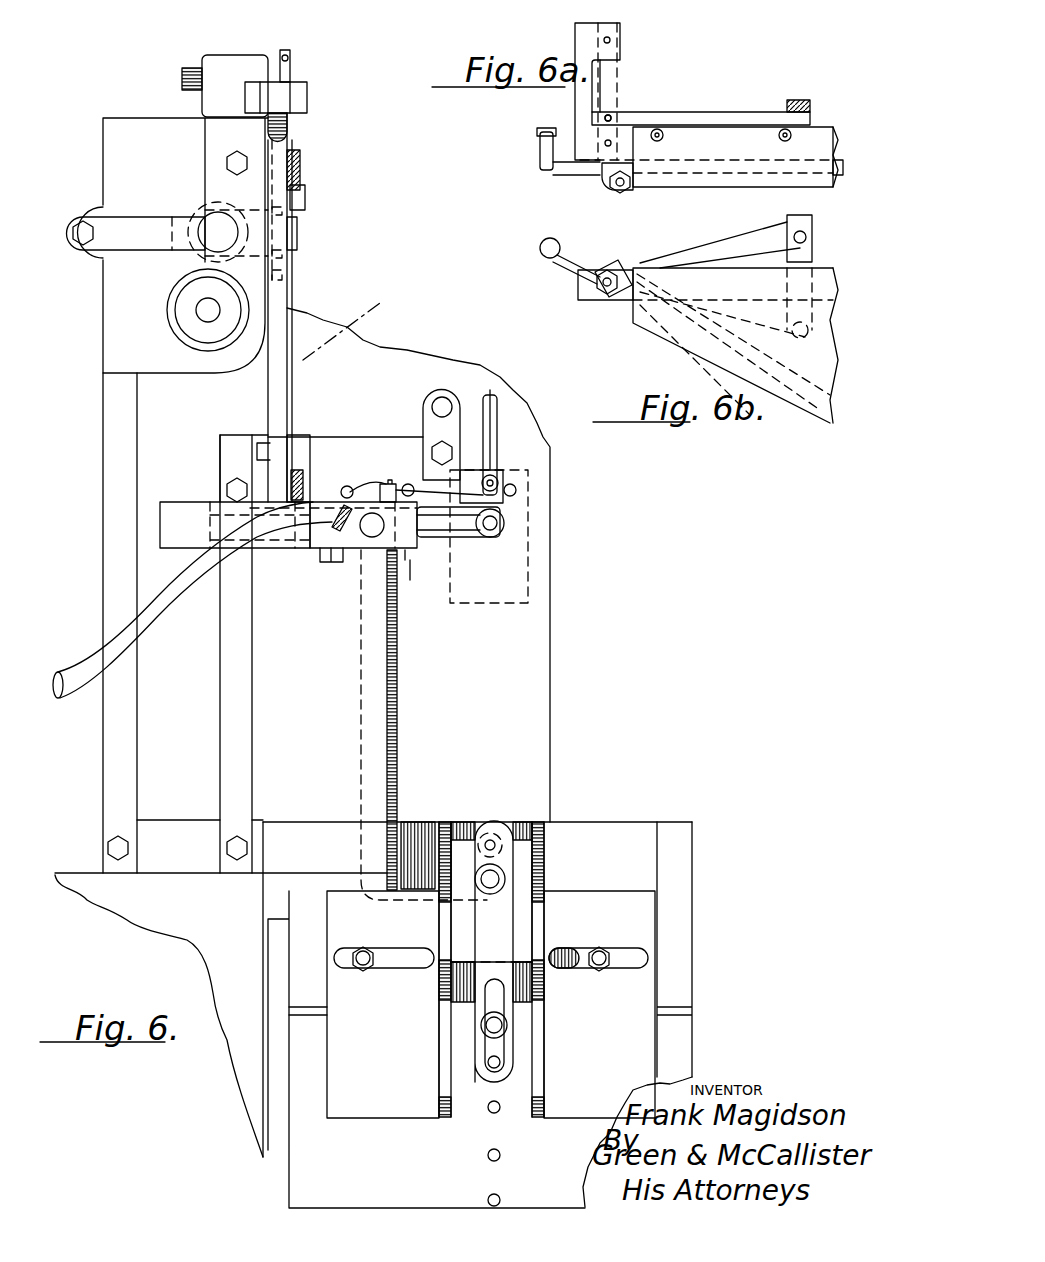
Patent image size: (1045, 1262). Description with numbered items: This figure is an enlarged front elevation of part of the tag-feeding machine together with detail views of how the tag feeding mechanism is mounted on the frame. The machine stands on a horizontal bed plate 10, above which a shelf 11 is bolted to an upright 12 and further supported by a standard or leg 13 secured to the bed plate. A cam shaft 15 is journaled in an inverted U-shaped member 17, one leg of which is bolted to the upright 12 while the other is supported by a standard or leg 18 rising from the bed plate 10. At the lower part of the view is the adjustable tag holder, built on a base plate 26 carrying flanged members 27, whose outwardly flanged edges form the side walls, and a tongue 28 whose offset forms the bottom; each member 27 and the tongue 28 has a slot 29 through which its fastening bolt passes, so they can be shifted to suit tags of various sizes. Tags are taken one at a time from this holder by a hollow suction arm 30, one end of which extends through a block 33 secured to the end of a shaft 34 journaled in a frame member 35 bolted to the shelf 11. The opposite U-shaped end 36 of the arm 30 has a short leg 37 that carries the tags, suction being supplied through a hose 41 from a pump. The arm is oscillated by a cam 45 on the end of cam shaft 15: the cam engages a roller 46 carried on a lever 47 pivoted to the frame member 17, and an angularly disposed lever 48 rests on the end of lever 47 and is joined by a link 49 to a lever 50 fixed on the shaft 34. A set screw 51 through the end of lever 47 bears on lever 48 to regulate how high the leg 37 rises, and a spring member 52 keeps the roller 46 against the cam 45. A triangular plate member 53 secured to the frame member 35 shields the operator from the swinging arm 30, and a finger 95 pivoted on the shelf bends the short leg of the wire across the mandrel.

In FIG. 6, the bed plate 10 is at (172, 867).
In FIG. 6, the shelf 11 is at (348, 427).
In FIG. 6, the upright 12 is at (200, 611).
In FIG. 6, the standard or leg 13 is at (236, 654).
In FIG. 6, the cam shaft 15 is at (218, 310).
In FIG. 6, the inverted U-shaped member 17 is at (173, 245).
In FIG. 6, the standard or leg 18 is at (119, 623).
In FIG. 6, the base plate 26 is at (674, 949).
In FIG. 6, the flanged members 27 is at (491, 1004).
In FIG. 6, the tongue 28 is at (491, 1013).
In FIG. 6, the slot 29 is at (404, 960).
In FIG. 6, the hollow suction arm 30 is at (375, 683).
In FIG. 6A, the hollow suction arm 30 is at (575, 172).
In FIG. 6B, the hollow suction arm 30 is at (575, 260).
In FIG. 6, the block 33 is at (405, 550).
In FIG. 6A, the block 33 is at (617, 190).
In FIG. 6B, the block 33 is at (605, 300).
In FIG. 6, the shaft 34 is at (273, 548).
In FIG. 6A, the shaft 34 is at (606, 89).
In FIG. 6, the frame member 35 is at (175, 502).
In FIG. 6A, the frame member 35 is at (583, 97).
In FIG. 6, the U-shaped end of arm 36 is at (432, 532).
In FIG. 6, the short leg 37 is at (505, 523).
In FIG. 6, the hose 41 is at (142, 643).
In FIG. 6, the cam 45 is at (168, 300).
In FIG. 6, the roller 46 is at (197, 218).
In FIG. 6, the lever 47 is at (136, 243).
In FIG. 6, the lever 48 is at (277, 100).
In FIG. 6, the link 49 is at (280, 292).
In FIG. 6A, the link 49 is at (787, 99).
In FIG. 6B, the link 49 is at (785, 224).
In FIG. 6, the lever 50 is at (293, 445).
In FIG. 6A, the lever 50 is at (730, 100).
In FIG. 6B, the lever 50 is at (726, 250).
In FIG. 6, the set screw 51 is at (290, 263).
In FIG. 6, the spring member 52 is at (356, 325).
In FIG. 6, the triangular shaped plate member 53 is at (398, 712).
In FIG. 6, the finger 95 is at (490, 443).